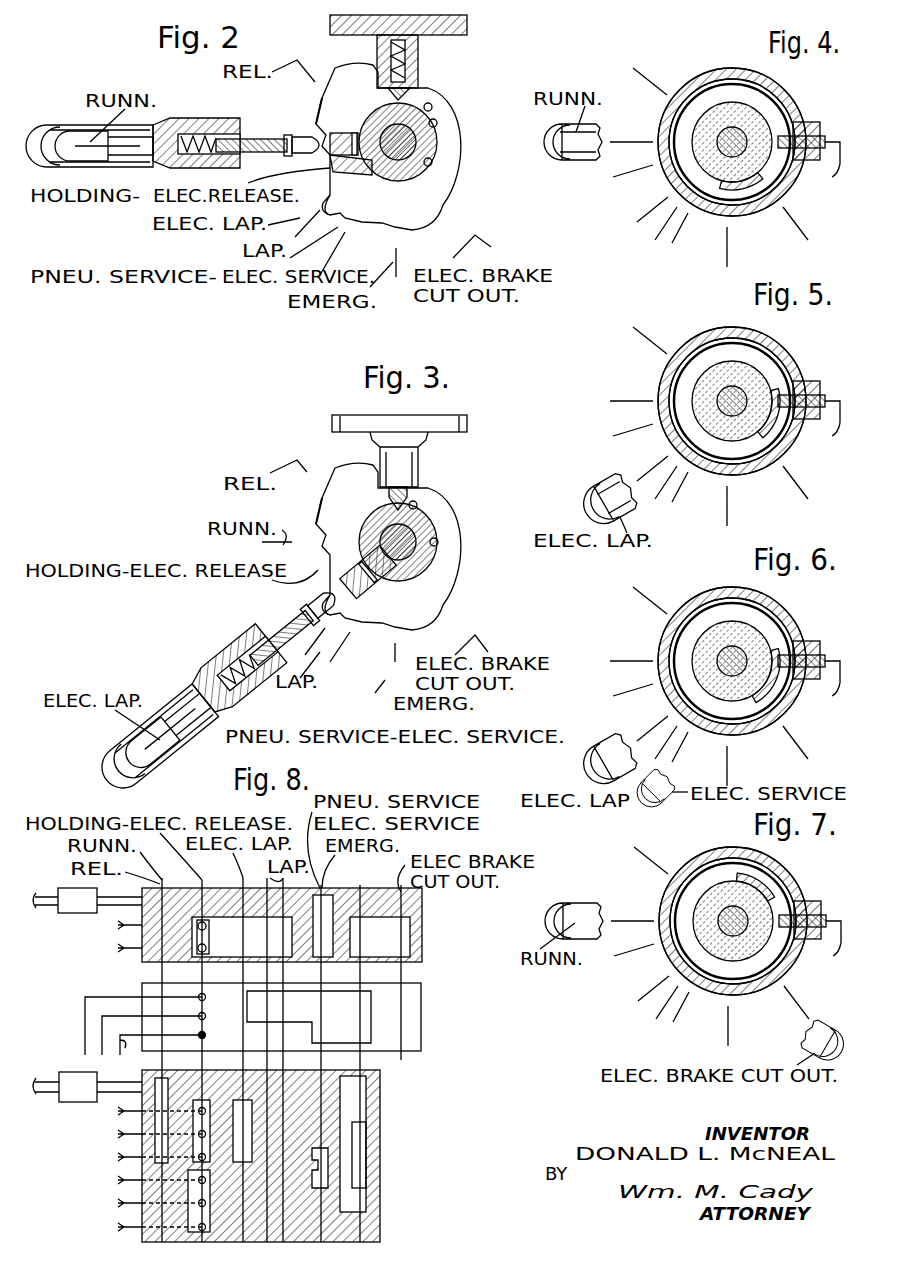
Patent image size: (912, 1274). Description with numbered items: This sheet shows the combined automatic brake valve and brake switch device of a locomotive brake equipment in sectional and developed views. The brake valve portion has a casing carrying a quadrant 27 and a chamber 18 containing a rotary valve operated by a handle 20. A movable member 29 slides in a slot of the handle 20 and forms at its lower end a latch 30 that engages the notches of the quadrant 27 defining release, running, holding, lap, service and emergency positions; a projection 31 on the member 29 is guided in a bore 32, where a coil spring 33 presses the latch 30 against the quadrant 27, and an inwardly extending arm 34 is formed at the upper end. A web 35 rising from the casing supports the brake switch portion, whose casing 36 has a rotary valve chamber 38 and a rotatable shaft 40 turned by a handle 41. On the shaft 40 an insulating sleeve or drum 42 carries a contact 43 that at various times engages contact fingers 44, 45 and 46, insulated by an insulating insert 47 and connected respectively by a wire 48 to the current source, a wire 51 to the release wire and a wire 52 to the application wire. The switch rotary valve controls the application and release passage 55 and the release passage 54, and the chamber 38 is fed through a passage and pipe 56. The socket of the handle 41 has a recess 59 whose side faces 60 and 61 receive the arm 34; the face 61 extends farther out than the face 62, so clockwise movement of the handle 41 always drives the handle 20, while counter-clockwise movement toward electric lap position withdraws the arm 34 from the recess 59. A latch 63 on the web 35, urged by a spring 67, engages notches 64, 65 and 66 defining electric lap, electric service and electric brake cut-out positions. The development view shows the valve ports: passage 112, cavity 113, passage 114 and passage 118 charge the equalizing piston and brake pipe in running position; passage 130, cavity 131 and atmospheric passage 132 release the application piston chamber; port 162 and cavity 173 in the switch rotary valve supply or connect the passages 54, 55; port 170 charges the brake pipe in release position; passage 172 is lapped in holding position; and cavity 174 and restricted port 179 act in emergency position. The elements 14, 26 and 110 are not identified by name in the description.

In FIG. 2, the piston 14 is at (118, 152).
In FIG. 8, the chamber 18 is at (70, 1078).
In FIG. 2, the handle 20 is at (55, 126).
In FIG. 3, the handle 20 is at (112, 762).
In FIG. 4, the handle 20 is at (561, 134).
In FIG. 5, the handle 20 is at (590, 501).
In FIG. 6, the handle 20 is at (608, 756).
In FIG. 7, the handle 20 is at (574, 908).
In FIG. 8, the contact 26 is at (215, 925).
In FIG. 2, the quadrant 27 is at (428, 222).
In FIG. 2, the movable member 29 is at (287, 134).
In FIG. 2, the latch 30 is at (303, 136).
In FIG. 3, the latch 30 is at (318, 600).
In FIG. 2, the projection 31 is at (255, 140).
In FIG. 2, the bore 32 is at (230, 136).
In FIG. 2, the coil spring 33 is at (200, 138).
In FIG. 2, the arm 34 is at (322, 118).
In FIG. 3, the arm 34 is at (322, 540).
In FIG. 2, the web 35 is at (467, 25).
In FIG. 3, the web 35 is at (430, 416).
In FIG. 4, the casing 36 is at (732, 131).
In FIG. 5, the casing 36 is at (731, 388).
In FIG. 6, the casing 36 is at (729, 653).
In FIG. 7, the casing 36 is at (733, 914).
In FIG. 8, the chamber 38 is at (60, 890).
In FIG. 2, the rotatable shaft 40 is at (420, 145).
In FIG. 3, the rotatable shaft 40 is at (418, 548).
In FIG. 4, the rotatable shaft 40 is at (727, 96).
In FIG. 5, the rotatable shaft 40 is at (722, 357).
In FIG. 6, the rotatable shaft 40 is at (724, 619).
In FIG. 7, the rotatable shaft 40 is at (729, 878).
In FIG. 3, the handle 41 is at (172, 752).
In FIG. 4, the handle 41 is at (578, 159).
In FIG. 5, the handle 41 is at (614, 483).
In FIG. 6, the handle 41 is at (647, 799).
In FIG. 7, the handle 41 is at (811, 1042).
In FIG. 4, the sleeve or drum 42 is at (757, 124).
In FIG. 5, the sleeve or drum 42 is at (732, 375).
In FIG. 6, the sleeve or drum 42 is at (753, 650).
In FIG. 7, the sleeve or drum 42 is at (700, 919).
In FIG. 4, the contact 43 is at (746, 208).
In FIG. 5, the contact 43 is at (763, 448).
In FIG. 6, the contact 43 is at (763, 705).
In FIG. 7, the contact 43 is at (776, 876).
In FIG. 8, the contact 43 is at (350, 1005).
In FIG. 4, the contact finger 44 is at (808, 127).
In FIG. 7, the contact finger 44 is at (805, 906).
In FIG. 8, the contact finger 44 is at (205, 995).
In FIG. 5, the contact finger 45 is at (803, 382).
In FIG. 8, the contact finger 45 is at (205, 1016).
In FIG. 6, the contact finger 46 is at (801, 687).
In FIG. 8, the contact finger 46 is at (215, 1035).
In FIG. 4, the insulating insert 47 is at (818, 171).
In FIG. 5, the insulating insert 47 is at (820, 427).
In FIG. 6, the insulating insert 47 is at (821, 686).
In FIG. 7, the insulating insert 47 is at (822, 946).
In FIG. 4, the wire 48 is at (838, 185).
In FIG. 7, the wire 48 is at (831, 964).
In FIG. 8, the wire 48 is at (85, 1005).
In FIG. 5, the wire 51 is at (834, 446).
In FIG. 8, the wire 51 is at (132, 1022).
In FIG. 6, the wire 52 is at (838, 706).
In FIG. 8, the wire 52 is at (122, 1052).
In FIG. 8, the release passage and pipe 54 is at (115, 930).
In FIG. 8, the application and release passage and pipe 55 is at (115, 950).
In FIG. 8, the passage and pipe 56 is at (40, 908).
In FIG. 2, the recess 59 is at (372, 176).
In FIG. 3, the recess 59 is at (402, 578).
In FIG. 2, the side face 60 is at (332, 204).
In FIG. 3, the side face 60 is at (325, 600).
In FIG. 2, the side face 61 is at (345, 168).
In FIG. 3, the side face 61 is at (378, 595).
In FIG. 2, the face 62 is at (352, 132).
In FIG. 3, the face 62 is at (358, 556).
In FIG. 2, the latch 63 is at (410, 95).
In FIG. 3, the latch 63 is at (410, 490).
In FIG. 2, the notch 64 is at (432, 108).
In FIG. 2, the notch 65 is at (437, 123).
In FIG. 3, the notch 65 is at (417, 505).
In FIG. 2, the notch 66 is at (432, 163).
In FIG. 3, the notch 66 is at (438, 541).
In FIG. 2, the spring 67 is at (406, 60).
In FIG. 8, the wire 110 is at (48, 1080).
In FIG. 8, the passage 112 is at (115, 1113).
In FIG. 8, the cavity 113 is at (240, 1115).
In FIG. 8, the passage 114 is at (115, 1159).
In FIG. 8, the passage 118 is at (115, 1136).
In FIG. 8, the passage 130 is at (115, 1228).
In FIG. 8, the cavity 131 is at (205, 1205).
In FIG. 8, the atmospheric passage 132 is at (115, 1181).
In FIG. 8, the port 162 is at (325, 905).
In FIG. 8, the port 170 is at (168, 1082).
In FIG. 8, the passage 172 is at (115, 1204).
In FIG. 8, the cavity 173 is at (410, 925).
In FIG. 8, the cavity 174 is at (358, 1143).
In FIG. 8, the restricted port 179 is at (342, 1115).